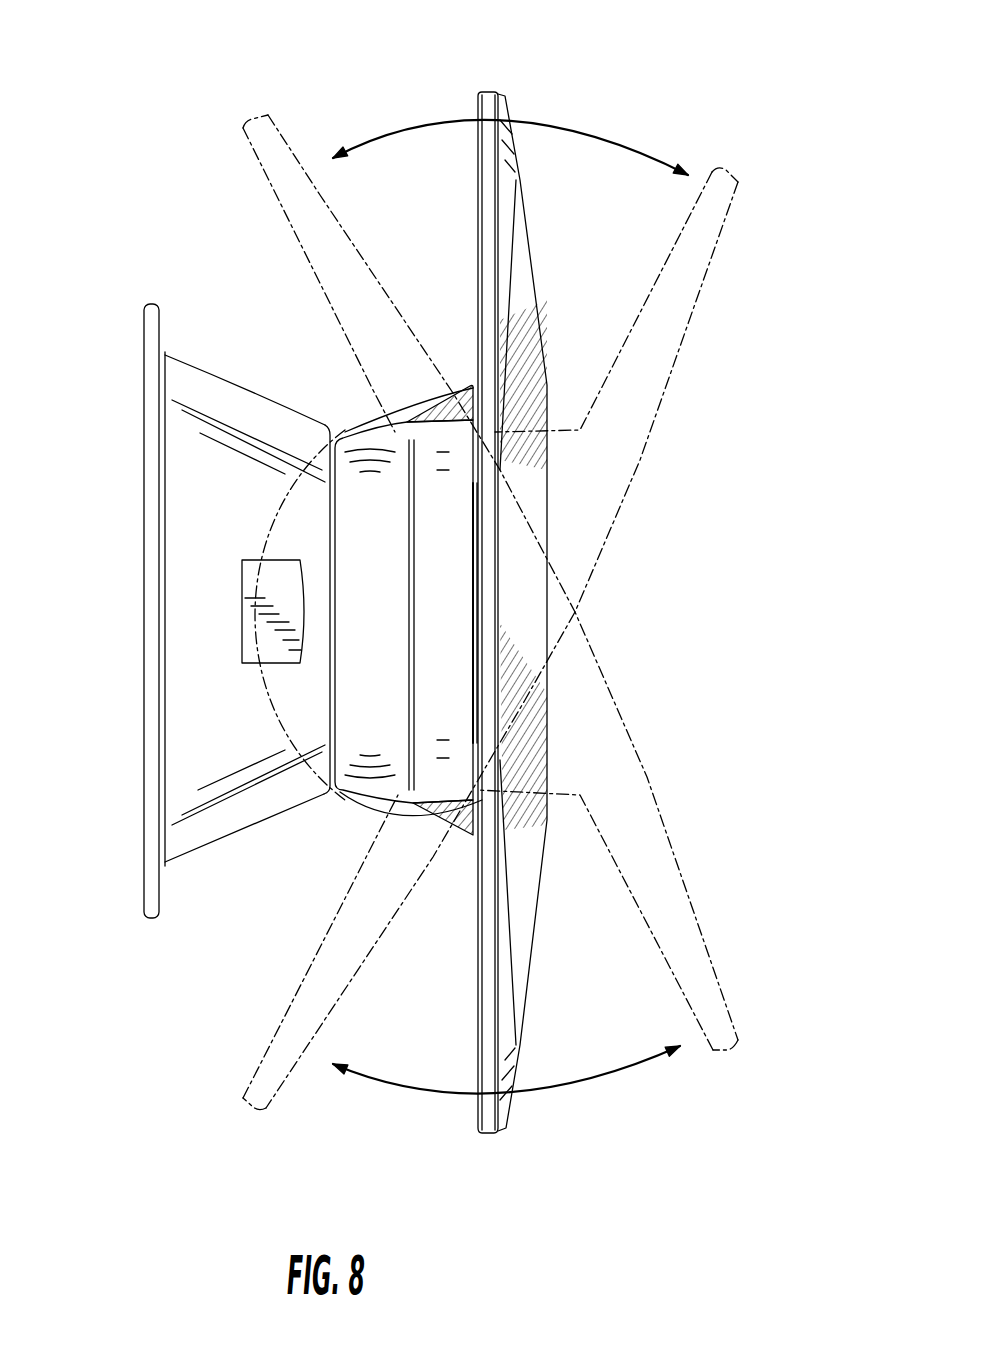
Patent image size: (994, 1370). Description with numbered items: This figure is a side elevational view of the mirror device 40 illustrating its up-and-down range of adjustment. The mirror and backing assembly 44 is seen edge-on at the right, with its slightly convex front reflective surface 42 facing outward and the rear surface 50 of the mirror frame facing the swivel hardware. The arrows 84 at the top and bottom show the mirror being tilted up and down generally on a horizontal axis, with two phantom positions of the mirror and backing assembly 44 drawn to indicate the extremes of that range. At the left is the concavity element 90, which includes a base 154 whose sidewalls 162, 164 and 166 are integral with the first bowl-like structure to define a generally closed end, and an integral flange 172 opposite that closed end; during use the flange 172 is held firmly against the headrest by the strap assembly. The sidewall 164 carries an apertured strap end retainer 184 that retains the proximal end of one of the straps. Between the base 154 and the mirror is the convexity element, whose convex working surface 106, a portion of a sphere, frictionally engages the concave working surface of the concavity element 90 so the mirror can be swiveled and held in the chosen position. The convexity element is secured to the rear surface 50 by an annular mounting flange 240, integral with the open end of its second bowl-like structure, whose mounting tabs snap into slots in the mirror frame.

The mirror device 40 is at (805, 164).
The front reflective surface 42 is at (548, 312).
The mirror and backing assembly 44 is at (518, 1178).
The rear surface 50 is at (478, 282).
The arrows 84 is at (573, 128).
The concavity element 90 is at (256, 346).
The convex working surface 106 is at (373, 415).
The base 154 is at (207, 850).
The sidewall 162 is at (188, 378).
The sidewall 164 is at (200, 632).
The sidewall 166 is at (237, 842).
The flange 172 is at (146, 315).
The apertured strap end retainer 184 is at (242, 582).
The annular mounting flange 240 is at (372, 840).